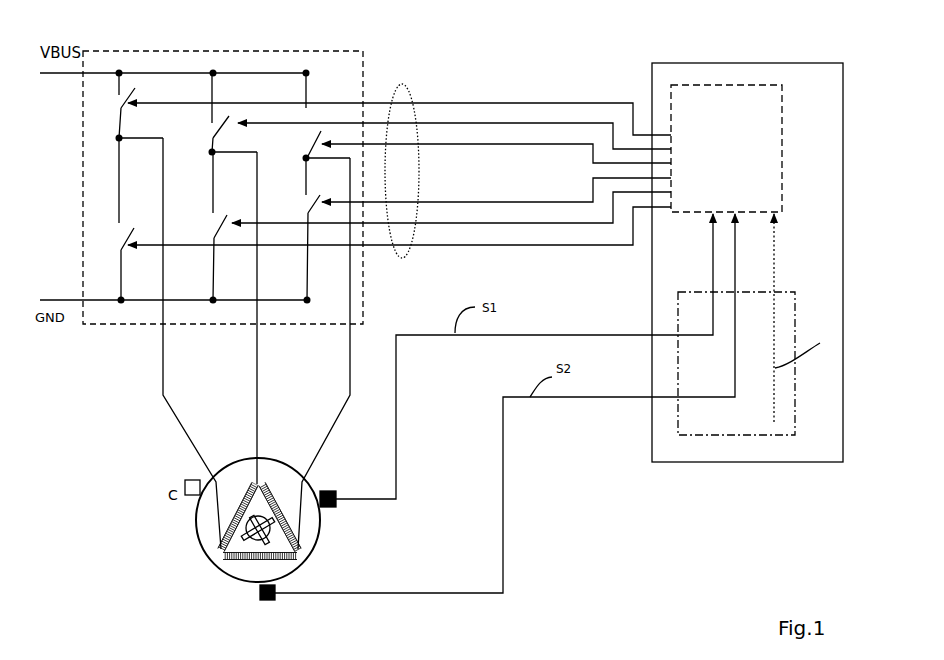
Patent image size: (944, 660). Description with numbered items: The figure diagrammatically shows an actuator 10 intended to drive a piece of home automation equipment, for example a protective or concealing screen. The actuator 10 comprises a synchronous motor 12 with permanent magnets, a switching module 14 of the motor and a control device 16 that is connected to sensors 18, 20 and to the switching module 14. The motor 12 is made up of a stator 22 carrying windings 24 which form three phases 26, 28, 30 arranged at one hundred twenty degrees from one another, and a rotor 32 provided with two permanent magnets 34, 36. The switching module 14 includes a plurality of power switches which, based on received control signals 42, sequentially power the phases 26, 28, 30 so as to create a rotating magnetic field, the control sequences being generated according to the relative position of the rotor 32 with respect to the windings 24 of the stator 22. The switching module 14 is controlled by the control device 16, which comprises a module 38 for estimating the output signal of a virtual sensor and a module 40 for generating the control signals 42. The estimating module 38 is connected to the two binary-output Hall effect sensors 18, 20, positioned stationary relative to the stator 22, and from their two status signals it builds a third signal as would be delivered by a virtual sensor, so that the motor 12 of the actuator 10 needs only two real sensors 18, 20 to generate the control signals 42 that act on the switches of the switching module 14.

The actuator 10 is at (578, 482).
The synchronous motor 12 is at (160, 545).
The switching module 14 is at (197, 51).
The control device 16 is at (747, 463).
The Hall effect sensor 18 is at (337, 503).
The Hall effect sensor 20 is at (276, 592).
The stator 22 is at (281, 461).
The windings 24 is at (236, 557).
The phase 26 is at (253, 566).
The phase 28 is at (198, 548).
The phase 30 is at (235, 505).
The rotor 32 is at (272, 494).
The permanent magnet 34 is at (243, 538).
The permanent magnet 36 is at (243, 507).
The module for estimating the output signal of a virtual sensor 38 is at (688, 437).
The module for generating control signals 40 is at (747, 85).
The control signals 42 is at (402, 86).